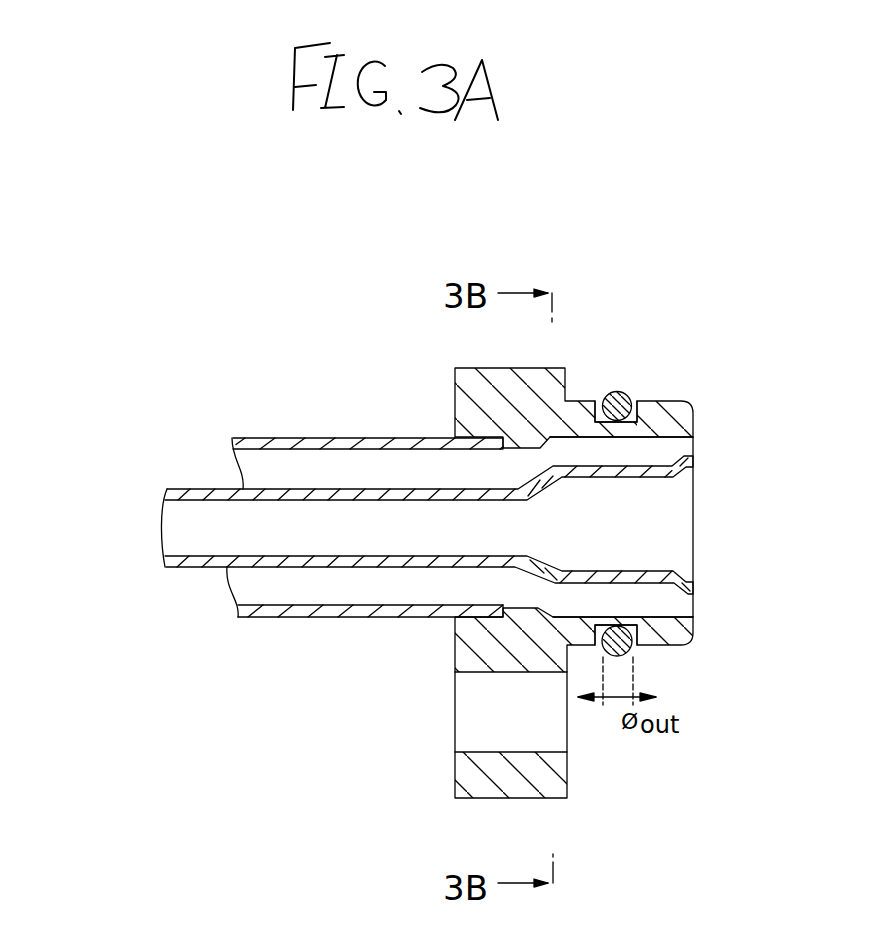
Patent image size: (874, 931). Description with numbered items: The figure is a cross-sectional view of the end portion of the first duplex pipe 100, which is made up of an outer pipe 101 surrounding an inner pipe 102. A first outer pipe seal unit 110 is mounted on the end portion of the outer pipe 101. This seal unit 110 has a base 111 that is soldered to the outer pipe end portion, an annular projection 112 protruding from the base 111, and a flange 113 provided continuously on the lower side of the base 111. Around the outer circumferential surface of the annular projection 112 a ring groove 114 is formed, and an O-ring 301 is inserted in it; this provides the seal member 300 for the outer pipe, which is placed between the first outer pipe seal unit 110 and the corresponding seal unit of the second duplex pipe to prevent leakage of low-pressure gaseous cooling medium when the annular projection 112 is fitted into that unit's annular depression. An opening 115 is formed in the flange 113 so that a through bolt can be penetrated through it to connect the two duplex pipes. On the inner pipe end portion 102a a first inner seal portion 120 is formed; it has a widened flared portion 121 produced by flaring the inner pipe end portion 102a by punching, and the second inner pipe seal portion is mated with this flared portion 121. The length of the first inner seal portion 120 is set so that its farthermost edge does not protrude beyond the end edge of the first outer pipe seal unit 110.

The first duplex pipe 100 is at (290, 373).
The outer pipe 101 is at (262, 440).
The inner pipe 102 is at (183, 490).
The inner pipe end portion 102a is at (520, 497).
The first outer pipe seal unit 110 is at (700, 393).
The base 111 is at (473, 383).
The annular projection 112 is at (660, 405).
The flange 113 is at (556, 791).
The ring groove 114 is at (587, 402).
The opening 115 is at (522, 750).
The first inner seal portion 120 is at (655, 460).
The flared portion 121 is at (623, 473).
The seal member for the outer pipe 300 is at (663, 293).
The O-ring 301 is at (627, 392).